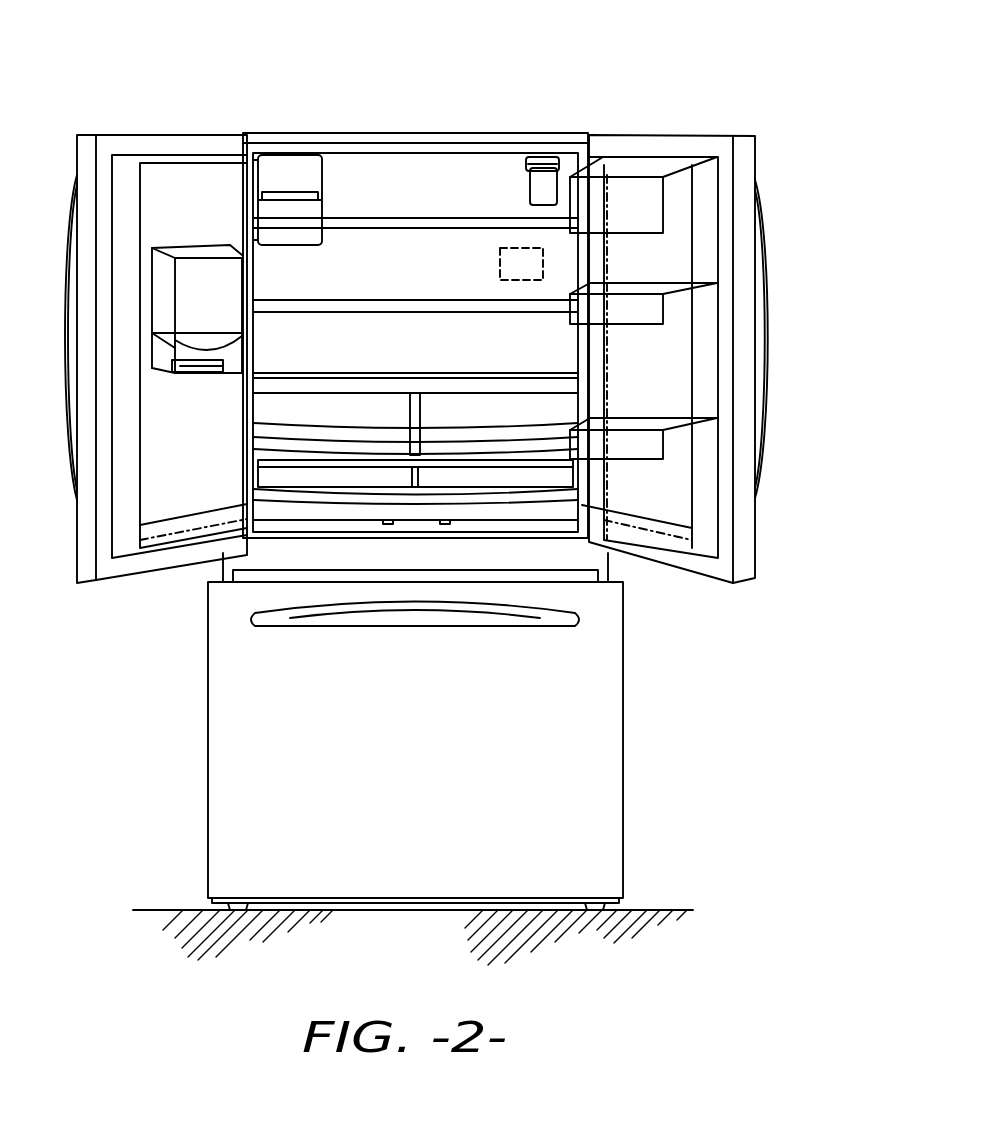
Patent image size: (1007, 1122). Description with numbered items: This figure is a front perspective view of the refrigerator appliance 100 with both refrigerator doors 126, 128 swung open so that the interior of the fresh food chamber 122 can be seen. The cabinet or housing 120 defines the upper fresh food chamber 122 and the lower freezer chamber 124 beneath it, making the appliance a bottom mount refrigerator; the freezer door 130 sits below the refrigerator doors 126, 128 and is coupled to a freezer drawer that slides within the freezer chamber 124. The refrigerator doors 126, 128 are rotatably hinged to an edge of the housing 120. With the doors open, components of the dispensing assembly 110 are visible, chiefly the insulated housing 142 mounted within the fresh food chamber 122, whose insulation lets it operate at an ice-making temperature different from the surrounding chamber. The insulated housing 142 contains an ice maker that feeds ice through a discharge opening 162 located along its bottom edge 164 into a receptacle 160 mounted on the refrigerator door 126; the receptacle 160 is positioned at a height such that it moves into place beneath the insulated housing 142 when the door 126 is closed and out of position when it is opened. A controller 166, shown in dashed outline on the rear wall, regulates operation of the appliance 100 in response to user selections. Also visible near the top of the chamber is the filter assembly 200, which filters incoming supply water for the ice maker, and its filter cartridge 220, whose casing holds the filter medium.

The refrigerator appliance 100 is at (410, 459).
The dispensing assembly 110 is at (240, 200).
The cabinet or housing 120 is at (208, 813).
The fresh food chamber 122 is at (395, 182).
The freezer chamber 124 is at (587, 690).
The refrigerator door 126 is at (123, 133).
The refrigerator door 128 is at (662, 135).
The freezer door 130 is at (587, 787).
The insulated housing 142 is at (288, 175).
The receptacle 160 is at (197, 273).
The discharge opening 162 is at (300, 244).
The bottom edge 164 is at (290, 247).
The controller 166 is at (498, 264).
The filter assembly 200 is at (522, 183).
The filter cartridge 220 is at (543, 183).